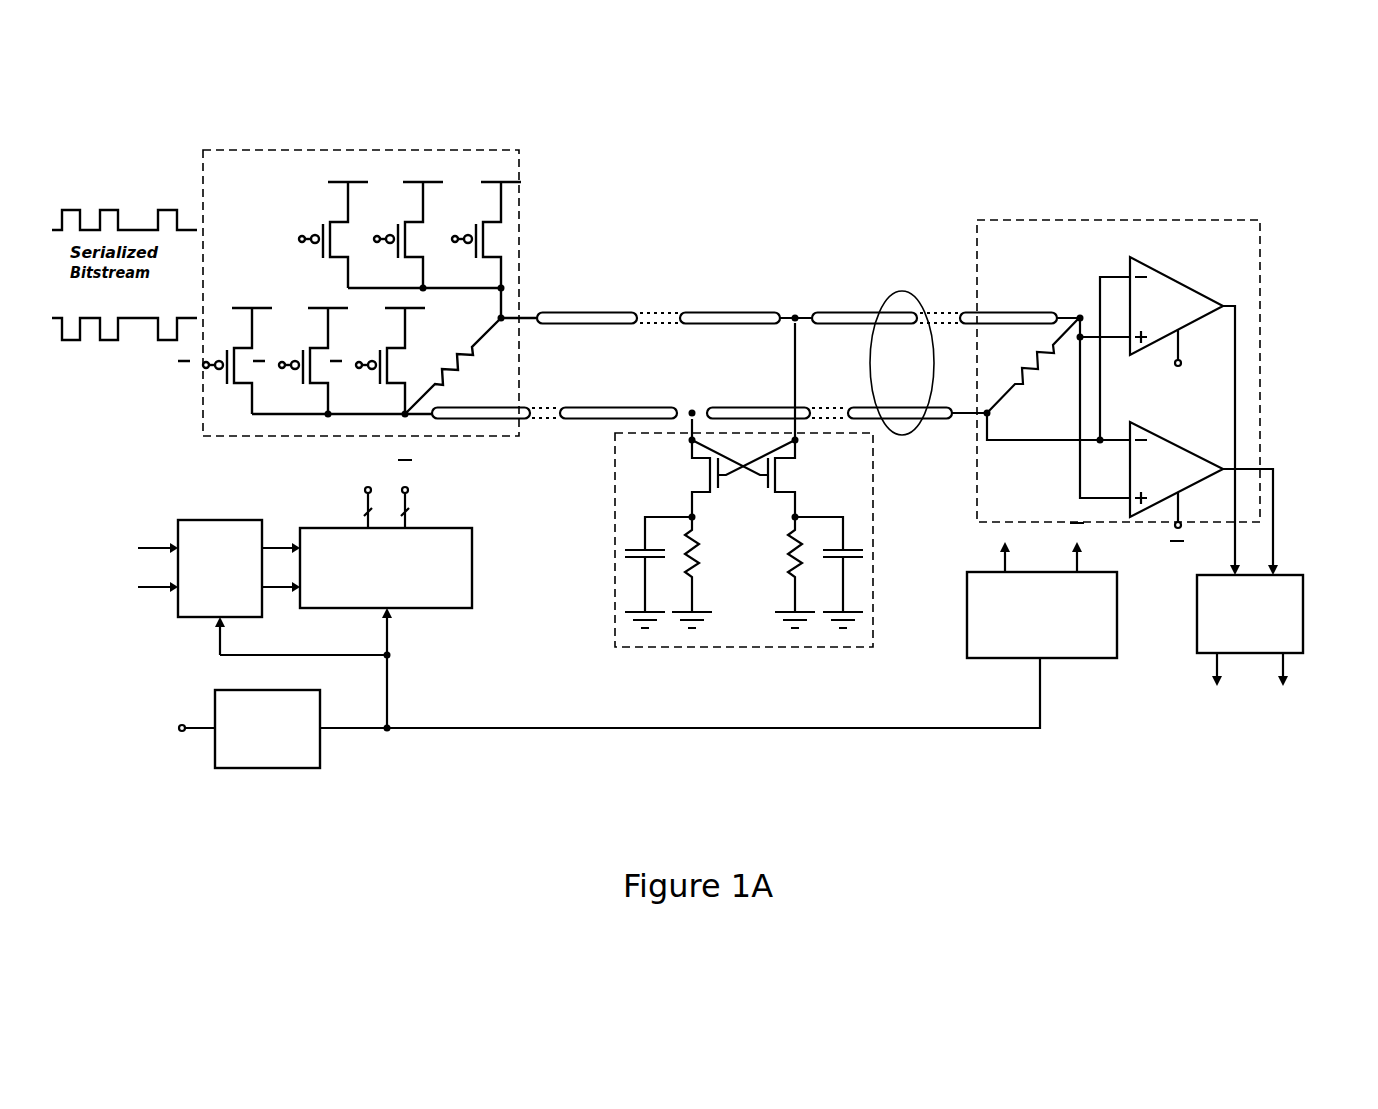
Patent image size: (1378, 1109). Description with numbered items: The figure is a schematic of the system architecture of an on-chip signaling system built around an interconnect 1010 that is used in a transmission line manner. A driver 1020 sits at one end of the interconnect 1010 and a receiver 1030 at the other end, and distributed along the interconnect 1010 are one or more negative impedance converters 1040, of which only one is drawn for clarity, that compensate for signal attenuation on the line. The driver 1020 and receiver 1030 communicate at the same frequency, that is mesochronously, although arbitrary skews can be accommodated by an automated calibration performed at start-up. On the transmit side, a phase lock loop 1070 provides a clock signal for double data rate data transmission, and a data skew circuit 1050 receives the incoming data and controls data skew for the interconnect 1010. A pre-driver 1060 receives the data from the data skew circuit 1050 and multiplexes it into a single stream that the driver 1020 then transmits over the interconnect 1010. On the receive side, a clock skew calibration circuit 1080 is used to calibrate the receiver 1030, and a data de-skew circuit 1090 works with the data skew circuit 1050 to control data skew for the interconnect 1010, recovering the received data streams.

The interconnect 1010 is at (880, 283).
The driver 1020 is at (292, 132).
The receiver 1030 is at (1140, 213).
The negative impedance converter 1040 is at (825, 658).
The data skew circuit 1050 is at (208, 508).
The pre-driver 1060 is at (327, 522).
The phase lock loop 1070 is at (305, 785).
The clock skew calibration circuit 1080 is at (1087, 667).
The data de-skew circuit 1090 is at (1318, 628).